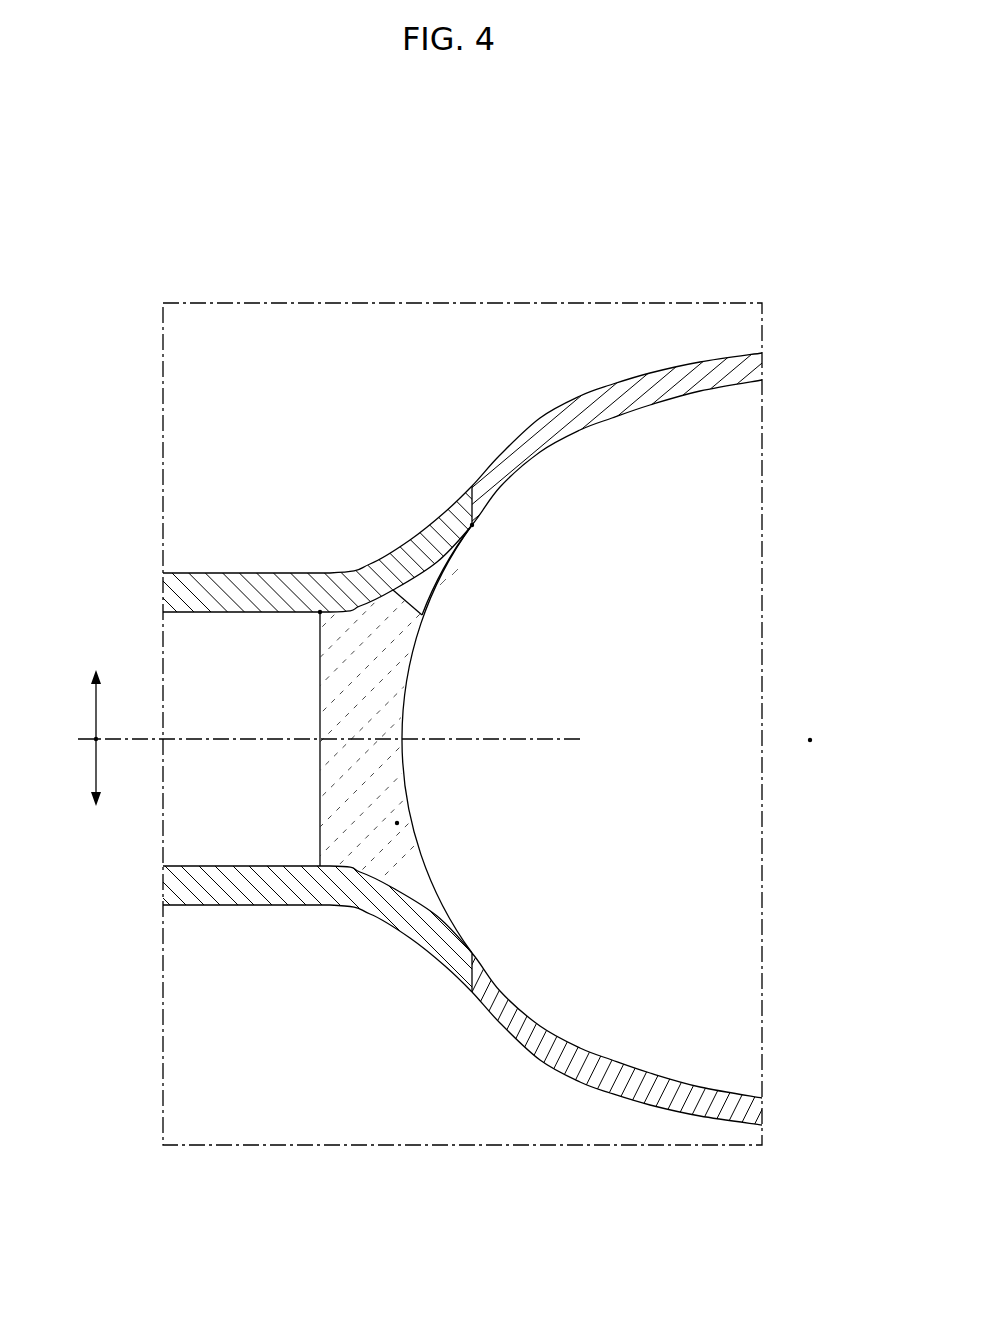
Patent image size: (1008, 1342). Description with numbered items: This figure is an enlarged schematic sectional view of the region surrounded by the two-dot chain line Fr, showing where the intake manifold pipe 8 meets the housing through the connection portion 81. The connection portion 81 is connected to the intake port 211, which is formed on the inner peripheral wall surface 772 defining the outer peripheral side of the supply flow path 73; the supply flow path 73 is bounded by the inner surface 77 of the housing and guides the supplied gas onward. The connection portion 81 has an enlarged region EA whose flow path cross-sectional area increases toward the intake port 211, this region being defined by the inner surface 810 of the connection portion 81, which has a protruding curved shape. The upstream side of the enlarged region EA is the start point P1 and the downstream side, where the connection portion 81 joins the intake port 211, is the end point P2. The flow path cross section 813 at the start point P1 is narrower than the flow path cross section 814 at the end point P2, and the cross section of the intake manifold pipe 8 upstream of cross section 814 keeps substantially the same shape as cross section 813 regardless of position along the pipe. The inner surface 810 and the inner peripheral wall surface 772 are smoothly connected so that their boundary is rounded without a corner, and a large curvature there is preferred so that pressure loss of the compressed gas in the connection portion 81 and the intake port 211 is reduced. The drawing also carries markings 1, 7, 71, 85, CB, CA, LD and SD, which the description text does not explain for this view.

The vehicle body structure 1 is at (799, 313).
The lower frame member 7 is at (713, 1093).
The intake manifold pipe 8 is at (347, 907).
The junction region 71 is at (441, 571).
The supply flow path 73 is at (592, 656).
The inner surface 77 is at (619, 440).
The inner peripheral wall surface 772 is at (608, 414).
The connection portion 81 is at (389, 549).
The straight portion 85 is at (238, 572).
The intake port 211 is at (478, 493).
The inner surface 810 is at (423, 617).
The flow path cross section 813 is at (318, 796).
The flow path cross section 814 is at (407, 685).
The start point P1 is at (319, 614).
The end point P2 is at (474, 526).
The enlarged region EA is at (400, 823).
The center line CB is at (572, 741).
The center axis CA is at (812, 740).
The longitudinal direction LD is at (95, 705).
The side direction SD is at (95, 741).
The two-dot chain line Fr is at (162, 373).